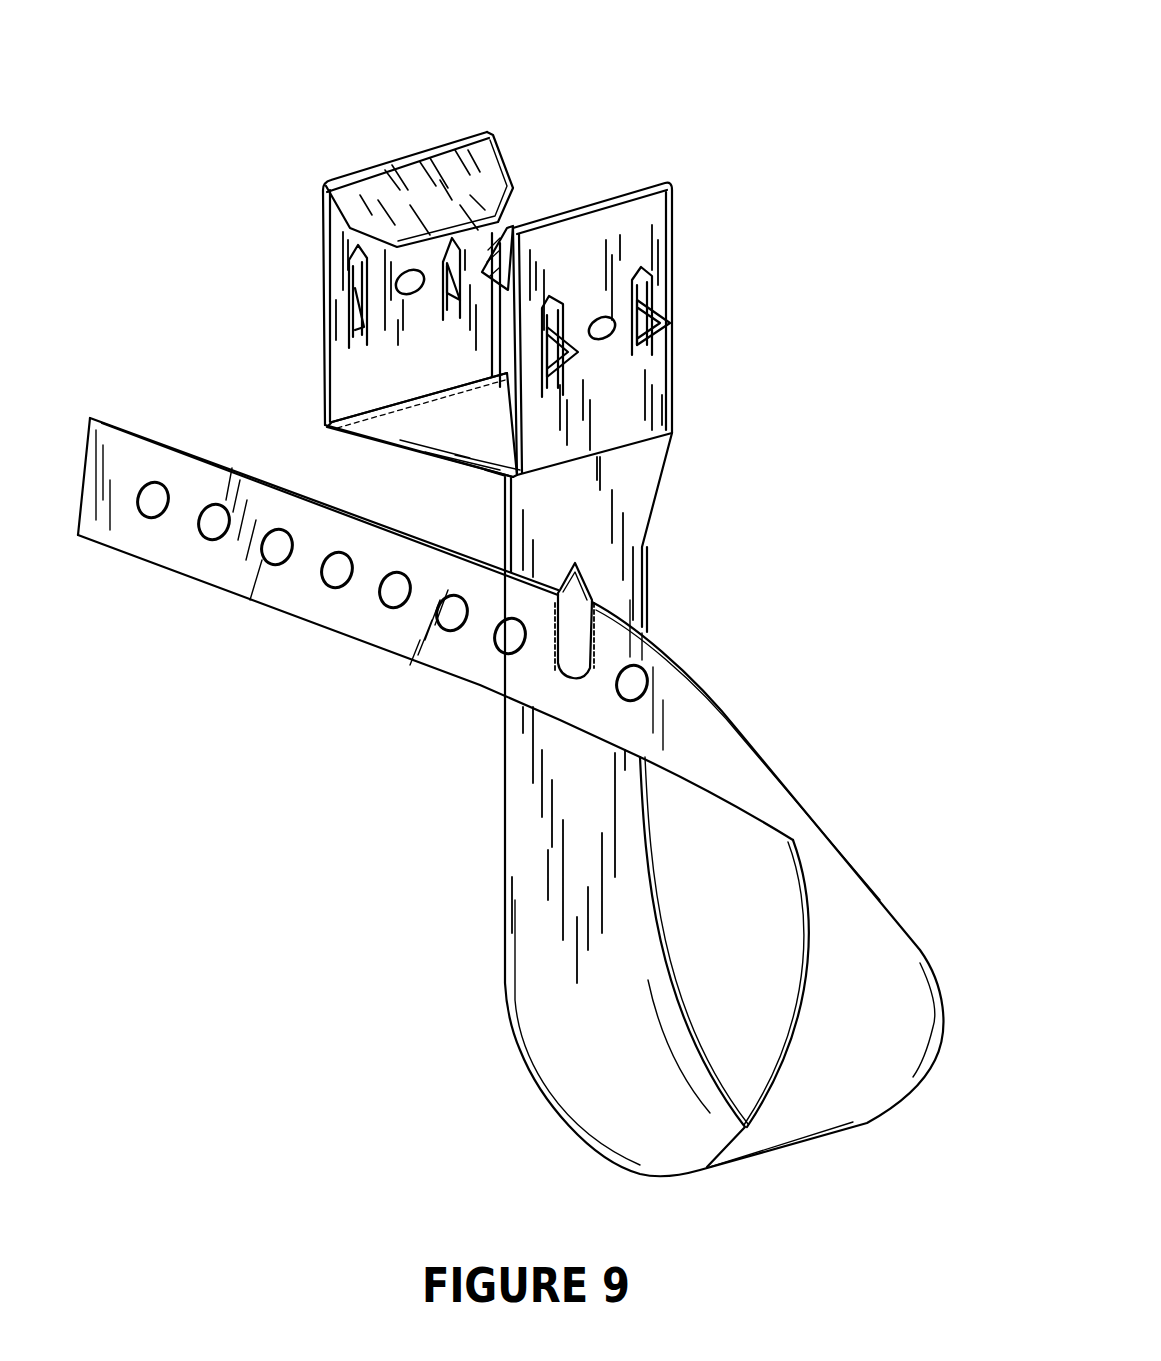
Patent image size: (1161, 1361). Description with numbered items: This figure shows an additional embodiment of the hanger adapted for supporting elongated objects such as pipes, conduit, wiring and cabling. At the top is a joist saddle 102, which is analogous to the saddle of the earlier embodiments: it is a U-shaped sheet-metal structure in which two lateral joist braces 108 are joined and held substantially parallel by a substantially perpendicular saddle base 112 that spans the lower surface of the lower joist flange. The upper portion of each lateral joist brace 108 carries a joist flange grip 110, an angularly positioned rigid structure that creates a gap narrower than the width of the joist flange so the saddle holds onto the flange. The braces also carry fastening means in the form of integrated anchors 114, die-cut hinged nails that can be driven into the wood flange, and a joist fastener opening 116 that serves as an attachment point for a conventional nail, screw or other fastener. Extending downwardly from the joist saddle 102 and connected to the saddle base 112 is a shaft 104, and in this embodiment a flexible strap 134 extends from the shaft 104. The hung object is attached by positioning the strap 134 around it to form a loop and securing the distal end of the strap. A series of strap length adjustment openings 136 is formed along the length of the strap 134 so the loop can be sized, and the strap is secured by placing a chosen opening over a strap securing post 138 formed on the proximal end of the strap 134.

The joist saddle 102 is at (247, 428).
The shaft 104 is at (527, 520).
The lateral joist brace 108 is at (674, 185).
The joist flange grip 110 is at (372, 185).
The saddle base 112 is at (330, 430).
The integrated anchor 114 is at (807, 330).
The joist fastener opening 116 is at (613, 343).
The strap 134 is at (605, 1150).
The strap length adjustment opening 136 is at (337, 588).
The strap securing post 138 is at (590, 590).